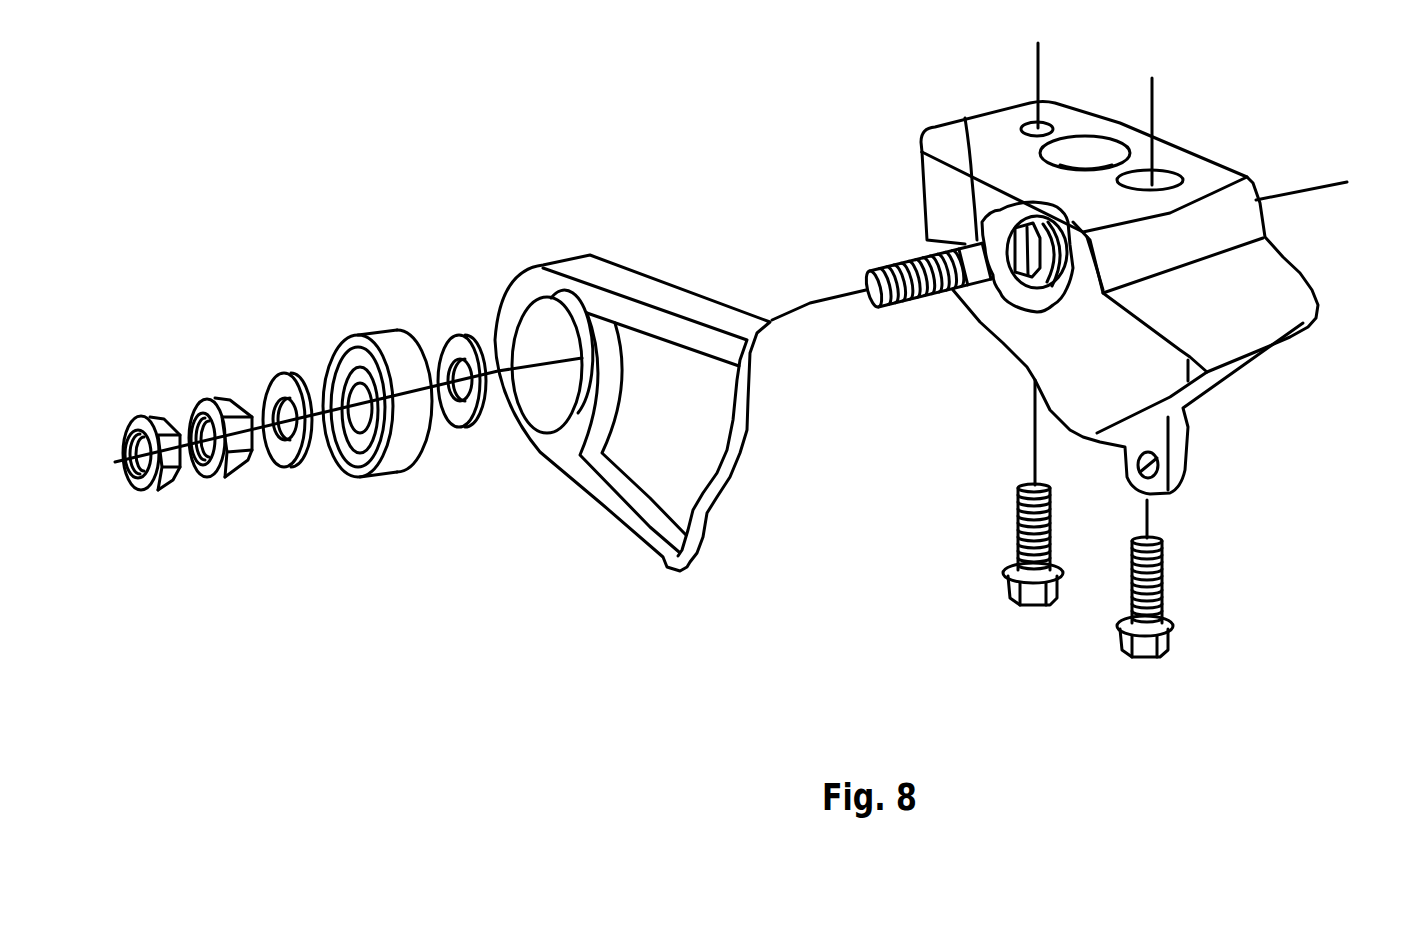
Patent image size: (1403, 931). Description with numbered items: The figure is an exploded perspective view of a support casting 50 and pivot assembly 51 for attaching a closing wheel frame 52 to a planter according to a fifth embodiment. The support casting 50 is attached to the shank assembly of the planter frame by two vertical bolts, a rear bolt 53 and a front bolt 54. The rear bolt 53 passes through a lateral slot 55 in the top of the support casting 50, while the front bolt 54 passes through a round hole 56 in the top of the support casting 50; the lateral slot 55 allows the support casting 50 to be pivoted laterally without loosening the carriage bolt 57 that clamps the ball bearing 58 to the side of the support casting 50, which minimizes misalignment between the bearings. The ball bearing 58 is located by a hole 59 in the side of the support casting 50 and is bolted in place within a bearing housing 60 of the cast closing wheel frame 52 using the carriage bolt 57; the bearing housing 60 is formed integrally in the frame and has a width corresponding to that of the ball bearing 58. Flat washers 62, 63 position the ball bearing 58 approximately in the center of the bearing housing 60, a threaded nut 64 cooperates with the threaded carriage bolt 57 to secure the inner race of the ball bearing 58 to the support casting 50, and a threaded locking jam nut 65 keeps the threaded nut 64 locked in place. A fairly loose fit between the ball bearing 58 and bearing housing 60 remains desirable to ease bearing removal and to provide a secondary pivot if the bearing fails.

The support casting 50 is at (1293, 289).
The pivot assembly 51 is at (569, 191).
The closing wheel frame 52 is at (653, 483).
The rear bolt 53 is at (1162, 590).
The front bolt 54 is at (1023, 530).
The lateral slot 55 is at (1170, 173).
The round hole 56 is at (1047, 125).
The carriage bolt 57 is at (912, 260).
The ball bearing 58 is at (402, 455).
The hole 59 is at (965, 118).
The bearing housing 60 is at (527, 313).
The flat washer 62 is at (448, 347).
The flat washer 63 is at (274, 386).
The threaded nut 64 is at (208, 398).
The threaded locking jam nut 65 is at (147, 414).